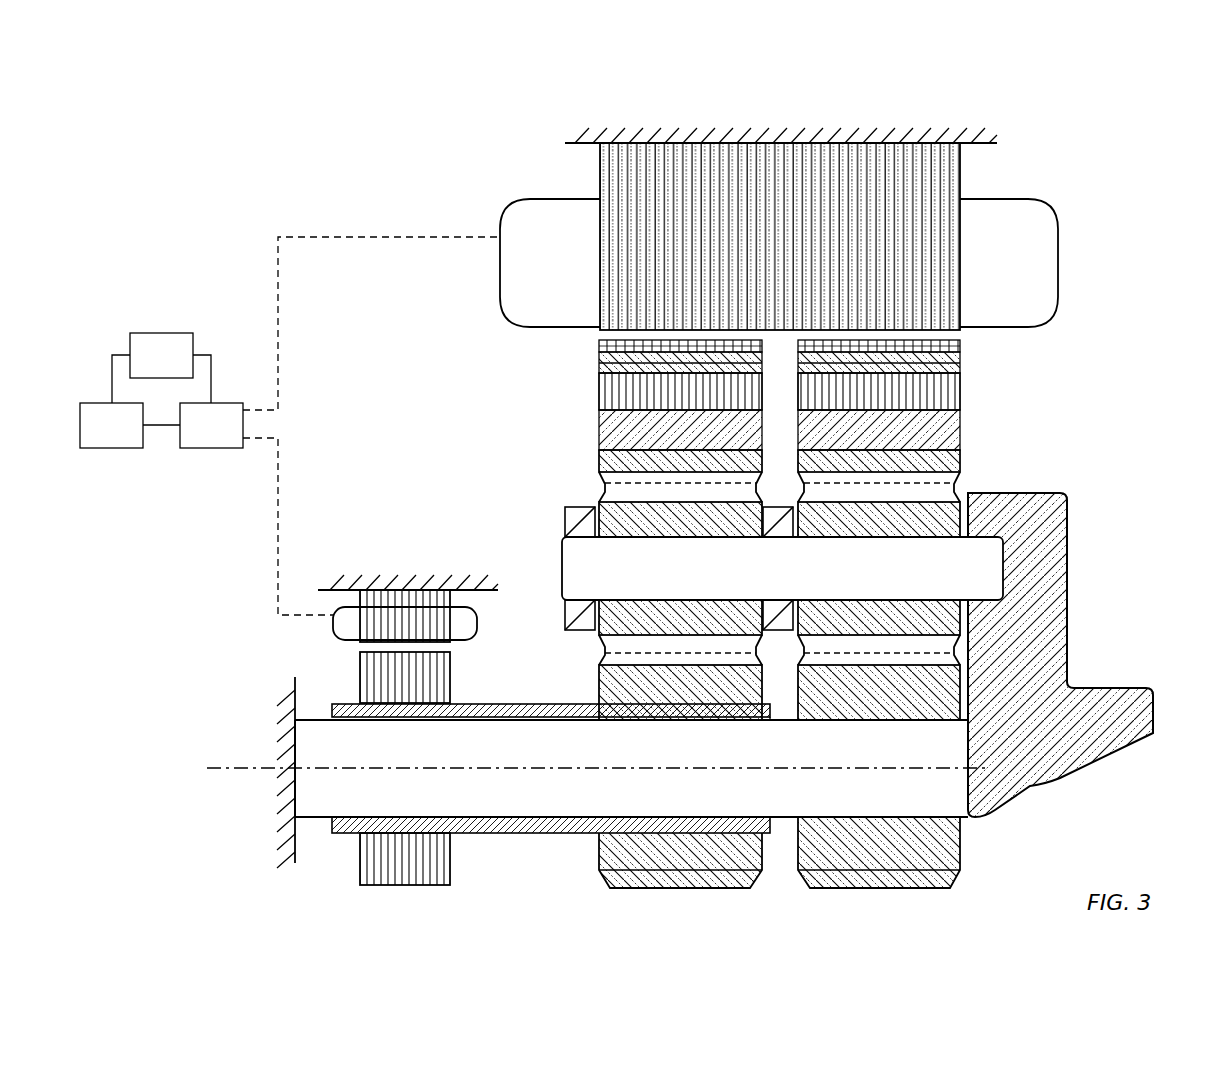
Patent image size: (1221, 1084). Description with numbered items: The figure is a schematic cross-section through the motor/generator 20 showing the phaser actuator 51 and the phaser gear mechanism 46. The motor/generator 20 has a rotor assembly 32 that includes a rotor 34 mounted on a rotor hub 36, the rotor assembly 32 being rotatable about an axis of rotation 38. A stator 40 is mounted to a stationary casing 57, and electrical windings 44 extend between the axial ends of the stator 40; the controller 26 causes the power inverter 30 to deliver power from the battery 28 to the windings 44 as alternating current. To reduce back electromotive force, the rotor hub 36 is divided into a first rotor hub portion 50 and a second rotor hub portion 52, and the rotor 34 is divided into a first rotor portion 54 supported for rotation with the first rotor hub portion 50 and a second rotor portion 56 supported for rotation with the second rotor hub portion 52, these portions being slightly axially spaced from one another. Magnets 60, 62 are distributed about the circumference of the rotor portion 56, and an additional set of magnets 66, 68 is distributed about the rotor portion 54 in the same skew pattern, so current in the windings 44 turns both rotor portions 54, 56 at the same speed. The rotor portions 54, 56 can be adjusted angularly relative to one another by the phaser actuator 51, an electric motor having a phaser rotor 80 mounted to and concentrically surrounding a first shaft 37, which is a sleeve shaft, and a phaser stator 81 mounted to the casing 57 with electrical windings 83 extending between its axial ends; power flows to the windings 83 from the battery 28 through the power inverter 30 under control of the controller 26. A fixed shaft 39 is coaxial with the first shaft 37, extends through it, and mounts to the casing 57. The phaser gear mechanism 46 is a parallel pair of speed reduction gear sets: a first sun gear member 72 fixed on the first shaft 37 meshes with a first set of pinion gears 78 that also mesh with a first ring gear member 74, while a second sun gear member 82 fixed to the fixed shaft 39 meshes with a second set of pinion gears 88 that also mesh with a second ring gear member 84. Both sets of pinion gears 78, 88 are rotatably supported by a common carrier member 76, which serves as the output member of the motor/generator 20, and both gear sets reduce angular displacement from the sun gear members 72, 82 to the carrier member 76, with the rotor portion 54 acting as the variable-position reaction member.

The motor/generator 20 is at (436, 134).
The controller 26 is at (111, 401).
The battery 28 is at (161, 355).
The power inverter 30 is at (321, 342).
The rotor assembly 32 is at (595, 406).
The rotor 34 is at (599, 403).
The rotor hub 36 is at (599, 451).
The first shaft 37 is at (550, 703).
The axis of rotation 38 is at (228, 766).
The fixed shaft 39 is at (631, 768).
The stator 40 is at (780, 236).
The electrical windings 44 is at (558, 199).
The phaser gear mechanism 46 is at (981, 387).
The first rotor hub portion 50 is at (599, 430).
The phaser actuator 51 is at (349, 737).
The second rotor hub portion 52 is at (962, 428).
The first rotor portion 54 is at (599, 390).
The second rotor portion 56 is at (962, 390).
The casing 57 is at (992, 134).
The magnet 60 is at (971, 351).
The magnet 62 is at (962, 366).
The magnet 66 is at (600, 344).
The magnet 68 is at (599, 365).
The first sun gear member 72 is at (680, 744).
The first ring gear member 74 is at (599, 466).
The carrier member 76 is at (1143, 623).
The first set of pinion gears 78 is at (680, 519).
The phaser rotor 80 is at (405, 768).
The phaser stator 81 is at (405, 616).
The second sun gear member 82 is at (879, 744).
The electrical windings 83 is at (333, 612).
The second ring gear member 84 is at (962, 462).
The second set of pinion gears 88 is at (879, 519).